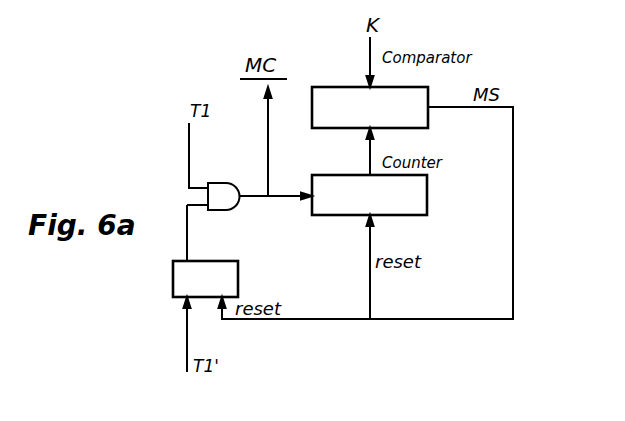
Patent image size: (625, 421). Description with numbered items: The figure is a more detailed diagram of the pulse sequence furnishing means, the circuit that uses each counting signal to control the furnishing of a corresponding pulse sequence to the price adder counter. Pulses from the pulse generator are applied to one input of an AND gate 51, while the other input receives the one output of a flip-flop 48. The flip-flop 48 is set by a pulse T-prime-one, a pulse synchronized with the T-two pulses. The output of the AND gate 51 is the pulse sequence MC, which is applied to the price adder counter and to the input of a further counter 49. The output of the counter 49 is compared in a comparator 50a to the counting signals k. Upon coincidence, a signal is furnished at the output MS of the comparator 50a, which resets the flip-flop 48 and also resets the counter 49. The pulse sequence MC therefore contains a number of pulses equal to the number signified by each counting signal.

The flip-flop 48 is at (173, 261).
The further counter 49 is at (369, 195).
The comparator 50a is at (370, 107).
The AND gate 51 is at (222, 201).